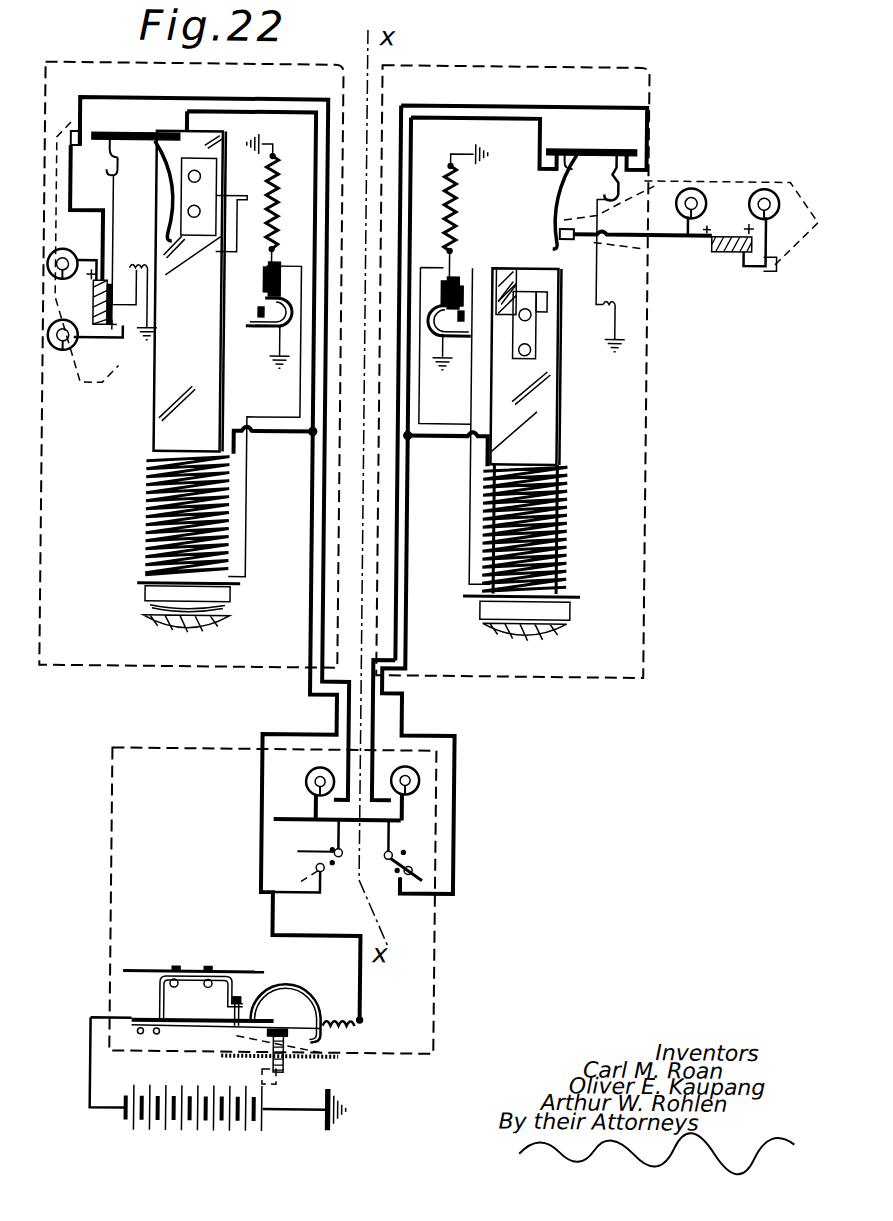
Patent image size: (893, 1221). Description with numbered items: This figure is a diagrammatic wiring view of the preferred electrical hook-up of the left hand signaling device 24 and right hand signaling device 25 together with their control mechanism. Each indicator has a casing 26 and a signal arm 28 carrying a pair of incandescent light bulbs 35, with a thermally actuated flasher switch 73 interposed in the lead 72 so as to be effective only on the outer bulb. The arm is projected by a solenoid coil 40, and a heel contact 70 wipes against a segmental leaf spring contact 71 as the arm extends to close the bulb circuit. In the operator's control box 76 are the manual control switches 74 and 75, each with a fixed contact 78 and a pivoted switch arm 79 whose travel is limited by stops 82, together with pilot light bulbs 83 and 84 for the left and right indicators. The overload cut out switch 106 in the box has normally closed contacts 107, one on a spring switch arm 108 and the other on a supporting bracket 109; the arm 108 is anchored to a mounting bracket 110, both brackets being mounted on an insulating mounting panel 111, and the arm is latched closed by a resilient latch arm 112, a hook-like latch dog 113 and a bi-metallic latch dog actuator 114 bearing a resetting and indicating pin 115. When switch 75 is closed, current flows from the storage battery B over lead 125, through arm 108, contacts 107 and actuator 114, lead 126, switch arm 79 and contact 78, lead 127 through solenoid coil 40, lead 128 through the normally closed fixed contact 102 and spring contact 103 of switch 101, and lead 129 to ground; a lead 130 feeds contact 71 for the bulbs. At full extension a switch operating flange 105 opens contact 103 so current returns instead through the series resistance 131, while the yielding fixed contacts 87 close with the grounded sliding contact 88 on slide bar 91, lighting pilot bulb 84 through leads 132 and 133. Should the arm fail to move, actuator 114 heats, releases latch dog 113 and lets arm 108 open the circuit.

The left hand signaling device 24 is at (165, 688).
The right hand signaling device 25 is at (590, 678).
The casing 26 is at (86, 670).
The signal arm 28 is at (112, 380).
The incandescent light bulb 35 is at (64, 253).
The solenoid coil 40 is at (145, 514).
The heel contact 70 is at (72, 133).
The segmental leaf spring contact 71 is at (160, 210).
The lead 72 is at (765, 250).
The thermally actuated flasher switch 73 is at (123, 321).
The manual control switch 74 is at (339, 875).
The manual control switch 75 is at (391, 877).
The control box 76 is at (445, 958).
The fixed contact 78 is at (318, 866).
The pivoted switch arm 79 is at (308, 852).
The switch arm stop 82 is at (406, 850).
The pilot light bulb 83 is at (328, 766).
The pilot light bulb 84 is at (420, 752).
The yielding fixed contact 87 is at (106, 179).
The grounded sliding contact 88 is at (150, 145).
The slide bar 91 is at (133, 268).
The switch 101 is at (259, 342).
The fixed contact 102 is at (262, 287).
The spring contact 103 is at (240, 325).
The switch operating flange 105 is at (243, 198).
The overload cut out switch 106 is at (263, 962).
The switch contacts 107 is at (238, 1012).
The spring switch arm 108 is at (185, 993).
The supporting bracket 109 is at (243, 1000).
The mounting bracket 110 is at (133, 1018).
The mounting panel 111 is at (140, 972).
The resilient latch arm 112 is at (285, 1030).
The latch dog 113 is at (334, 1033).
The bi-metallic latch dog actuator 114 is at (308, 993).
The resetting and indicating pin 115 is at (297, 1078).
The lead 125 is at (93, 1070).
The lead 126 is at (275, 838).
The lead 127 is at (408, 452).
The lead 128 is at (441, 276).
The lead 129 is at (432, 372).
The lead 130 is at (446, 168).
The series resistance 131 is at (454, 203).
The lead 132 is at (420, 796).
The lead 133 is at (640, 108).
The storage battery B is at (200, 1135).